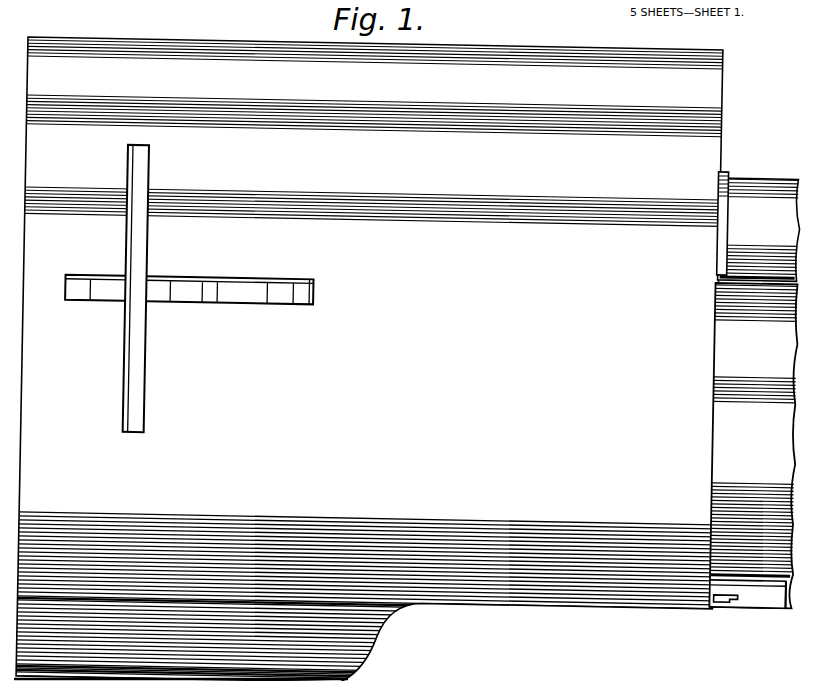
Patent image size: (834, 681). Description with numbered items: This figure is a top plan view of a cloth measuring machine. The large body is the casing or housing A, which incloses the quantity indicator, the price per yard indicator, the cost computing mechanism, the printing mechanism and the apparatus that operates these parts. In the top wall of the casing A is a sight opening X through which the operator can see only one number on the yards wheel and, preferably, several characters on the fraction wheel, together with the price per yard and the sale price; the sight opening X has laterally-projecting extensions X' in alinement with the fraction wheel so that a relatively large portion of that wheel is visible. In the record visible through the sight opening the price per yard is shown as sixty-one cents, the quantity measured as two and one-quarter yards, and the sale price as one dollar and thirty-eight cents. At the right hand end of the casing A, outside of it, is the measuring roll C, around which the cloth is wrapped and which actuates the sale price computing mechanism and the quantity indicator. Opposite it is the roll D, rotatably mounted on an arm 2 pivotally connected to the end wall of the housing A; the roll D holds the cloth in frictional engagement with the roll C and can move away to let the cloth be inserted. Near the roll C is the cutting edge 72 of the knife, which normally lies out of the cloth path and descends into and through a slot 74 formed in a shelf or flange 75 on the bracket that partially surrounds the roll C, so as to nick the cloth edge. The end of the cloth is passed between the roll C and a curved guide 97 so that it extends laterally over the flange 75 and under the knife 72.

The casing or housing A is at (369, 359).
The sight opening X is at (189, 301).
The laterally-projecting extensions X' is at (158, 323).
The arm 2 is at (726, 189).
The roll D is at (762, 263).
The roll C is at (753, 445).
The slot 74 is at (719, 592).
The cutting edge 72 is at (738, 589).
The shelf or flange 75 is at (758, 585).
The curved guide 97 is at (790, 586).